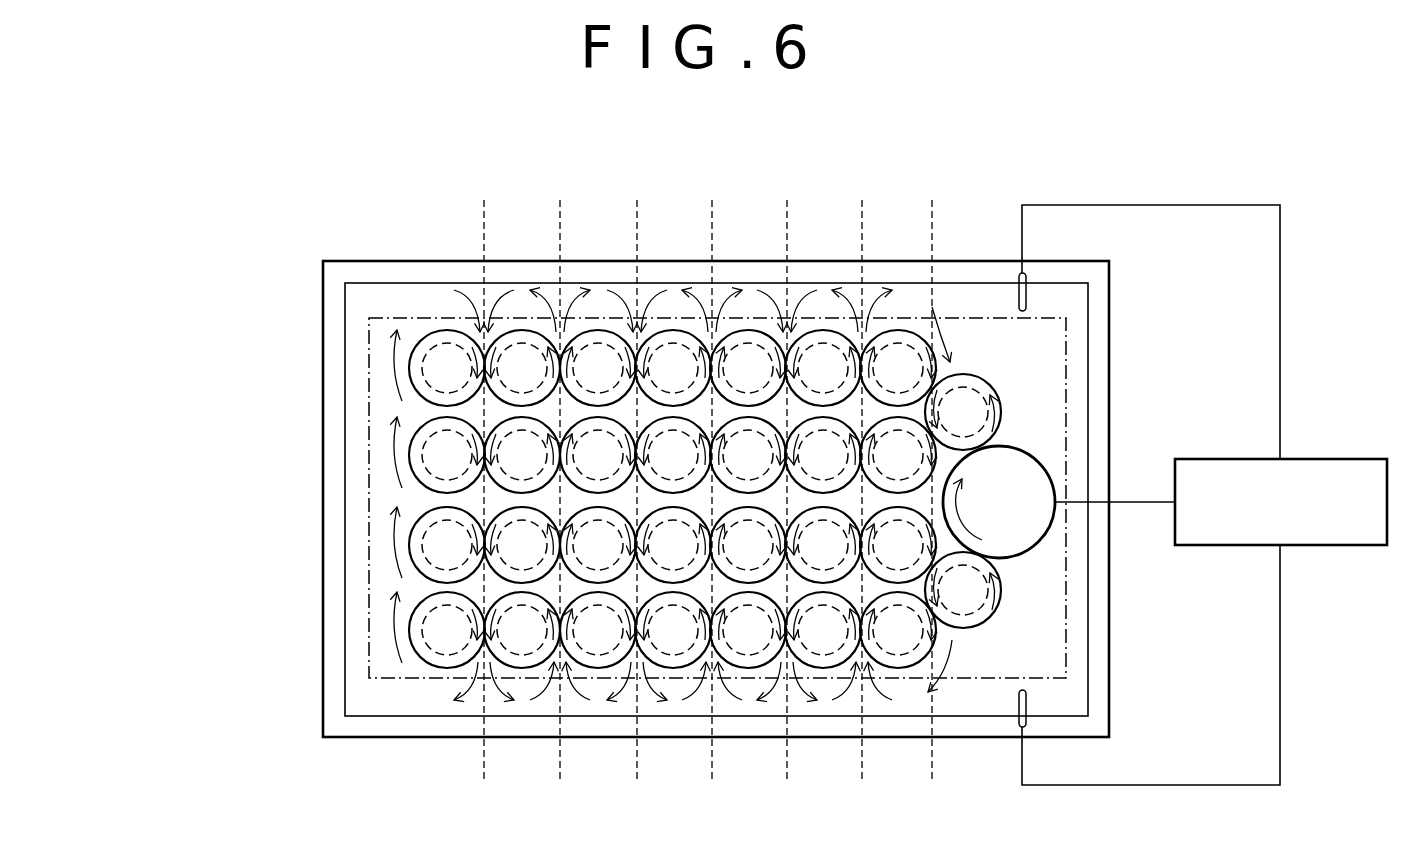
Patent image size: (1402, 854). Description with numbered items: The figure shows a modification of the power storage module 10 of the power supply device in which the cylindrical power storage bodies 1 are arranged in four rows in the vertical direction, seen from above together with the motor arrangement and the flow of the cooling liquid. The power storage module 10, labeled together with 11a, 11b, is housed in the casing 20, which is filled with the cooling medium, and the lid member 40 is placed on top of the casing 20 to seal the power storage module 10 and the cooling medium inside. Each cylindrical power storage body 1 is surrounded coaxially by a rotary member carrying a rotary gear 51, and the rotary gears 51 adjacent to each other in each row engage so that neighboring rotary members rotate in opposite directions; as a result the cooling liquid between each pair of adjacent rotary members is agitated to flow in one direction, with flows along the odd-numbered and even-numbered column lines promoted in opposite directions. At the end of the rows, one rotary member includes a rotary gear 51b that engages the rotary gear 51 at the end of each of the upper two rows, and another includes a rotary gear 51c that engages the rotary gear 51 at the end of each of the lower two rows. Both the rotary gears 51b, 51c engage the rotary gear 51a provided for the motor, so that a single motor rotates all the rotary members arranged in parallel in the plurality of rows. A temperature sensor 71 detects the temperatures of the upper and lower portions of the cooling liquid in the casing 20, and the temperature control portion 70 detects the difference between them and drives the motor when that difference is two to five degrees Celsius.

The cylindrical power storage body 1 is at (433, 655).
The power storage module 10 is at (369, 480).
The first plate member 11a is at (717, 498).
The second plate member 11b is at (717, 498).
The casing 20 is at (323, 311).
The lid member 40 is at (340, 261).
The rotary gear 51 is at (447, 330).
The rotary gear provided for the motor 51a is at (1050, 470).
The rotary gear 51b is at (1001, 413).
The rotary gear 51c is at (1001, 590).
The temperature control portion 70 is at (1340, 459).
The temperature sensor 71 is at (1019, 280).